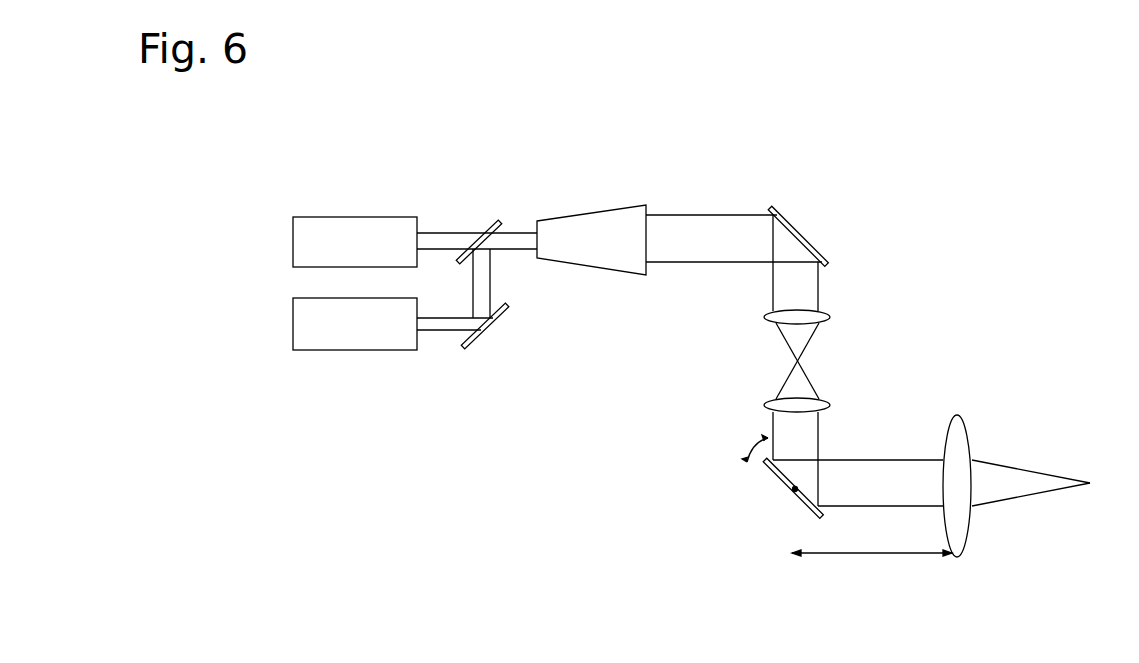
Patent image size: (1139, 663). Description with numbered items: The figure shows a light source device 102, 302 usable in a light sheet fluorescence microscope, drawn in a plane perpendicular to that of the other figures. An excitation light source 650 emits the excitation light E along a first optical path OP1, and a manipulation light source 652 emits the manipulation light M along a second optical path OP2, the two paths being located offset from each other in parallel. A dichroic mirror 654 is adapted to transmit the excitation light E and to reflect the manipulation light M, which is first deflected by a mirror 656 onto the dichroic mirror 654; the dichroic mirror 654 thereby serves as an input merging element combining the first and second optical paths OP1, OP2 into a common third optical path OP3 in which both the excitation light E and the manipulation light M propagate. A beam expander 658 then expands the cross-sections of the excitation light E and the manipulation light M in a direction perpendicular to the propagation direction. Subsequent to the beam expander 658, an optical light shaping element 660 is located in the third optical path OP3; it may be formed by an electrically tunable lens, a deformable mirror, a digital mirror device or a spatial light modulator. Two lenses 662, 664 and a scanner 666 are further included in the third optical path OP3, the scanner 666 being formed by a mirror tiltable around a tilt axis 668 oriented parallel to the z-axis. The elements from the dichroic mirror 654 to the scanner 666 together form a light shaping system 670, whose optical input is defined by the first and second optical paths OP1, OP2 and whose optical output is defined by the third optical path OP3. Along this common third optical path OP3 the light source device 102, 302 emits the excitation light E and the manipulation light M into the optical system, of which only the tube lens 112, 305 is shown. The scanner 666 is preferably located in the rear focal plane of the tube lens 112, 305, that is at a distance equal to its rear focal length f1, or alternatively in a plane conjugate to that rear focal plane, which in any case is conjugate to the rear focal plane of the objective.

The excitation light source 650 is at (293, 247).
The manipulation light source 652 is at (293, 326).
The dichroic mirror 654 is at (490, 220).
The mirror 656 is at (506, 308).
The beam expander 658 is at (622, 205).
The optical light shaping element 660 is at (831, 241).
The lens 662 is at (829, 311).
The lens 664 is at (823, 399).
The scanner 666 is at (766, 481).
The tilt axis 668 is at (797, 493).
The light shaping system 670 is at (706, 164).
The light source device 102 is at (248, 409).
The light source device 302 is at (278, 377).
The tube lens 112 is at (1027, 486).
The tube lens 305 is at (970, 529).
The first optical path OP1 is at (444, 242).
The second optical path OP2 is at (441, 328).
The third optical path OP3 is at (695, 243).
The excitation light E is at (433, 251).
The manipulation light M is at (437, 333).
The rear focal length f1 is at (859, 553).